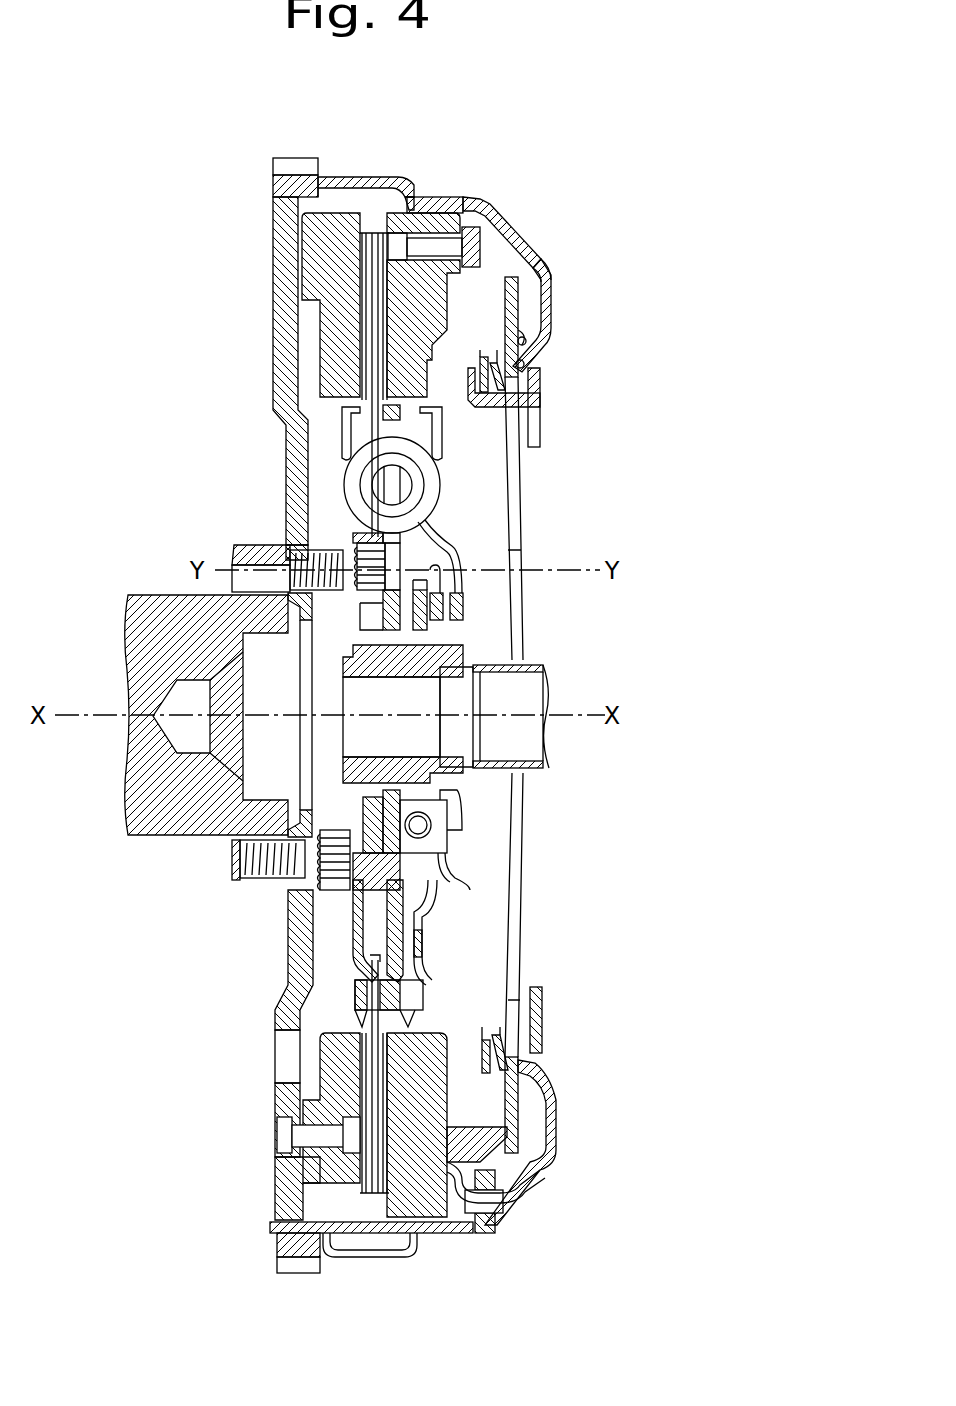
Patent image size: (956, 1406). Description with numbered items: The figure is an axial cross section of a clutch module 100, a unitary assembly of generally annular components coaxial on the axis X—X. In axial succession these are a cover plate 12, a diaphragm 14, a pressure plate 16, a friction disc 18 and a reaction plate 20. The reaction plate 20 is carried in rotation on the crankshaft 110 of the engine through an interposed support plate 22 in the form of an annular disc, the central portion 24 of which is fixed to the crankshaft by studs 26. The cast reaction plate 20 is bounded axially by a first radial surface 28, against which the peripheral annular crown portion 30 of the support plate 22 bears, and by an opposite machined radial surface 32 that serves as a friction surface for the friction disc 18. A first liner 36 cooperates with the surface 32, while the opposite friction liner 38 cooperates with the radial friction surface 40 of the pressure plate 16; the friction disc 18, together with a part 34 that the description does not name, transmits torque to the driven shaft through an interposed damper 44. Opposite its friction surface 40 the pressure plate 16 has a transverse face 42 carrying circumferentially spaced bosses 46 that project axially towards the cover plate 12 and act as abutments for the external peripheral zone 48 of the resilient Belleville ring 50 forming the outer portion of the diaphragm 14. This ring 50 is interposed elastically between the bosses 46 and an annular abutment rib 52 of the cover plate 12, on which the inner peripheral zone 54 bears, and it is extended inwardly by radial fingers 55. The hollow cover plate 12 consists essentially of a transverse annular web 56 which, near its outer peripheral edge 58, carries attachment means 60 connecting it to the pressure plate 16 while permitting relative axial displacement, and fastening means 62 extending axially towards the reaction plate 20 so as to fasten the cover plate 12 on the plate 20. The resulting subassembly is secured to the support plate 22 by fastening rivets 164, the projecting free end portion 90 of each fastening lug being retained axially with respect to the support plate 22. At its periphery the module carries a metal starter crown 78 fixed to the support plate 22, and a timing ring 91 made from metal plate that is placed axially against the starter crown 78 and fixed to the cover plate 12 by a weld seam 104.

The cover plate 12 is at (559, 313).
The diaphragm 14 is at (525, 493).
The pressure plate 16 is at (447, 209).
The friction disc 18 is at (310, 428).
The reaction plate 20 is at (316, 370).
The support plate 22 is at (281, 438).
The central portion 24 is at (305, 602).
The studs 26 is at (316, 535).
The first radial surface 28 is at (303, 258).
The peripheral annular crown portion 30 is at (285, 1195).
The radial surface 32 is at (365, 240).
The clutch plate 34 is at (365, 426).
The first liner 36 is at (370, 288).
The friction liner 38 is at (380, 323).
The radial friction surface 40 is at (460, 1215).
The transverse face 42 is at (448, 298).
The damper 44 is at (328, 470).
The bosses 46 is at (490, 278).
The external peripheral zone 48 is at (542, 278).
The Belleville ring 50 is at (519, 338).
The annular abutment rib 52 is at (522, 364).
The inner peripheral zone 54 is at (527, 398).
The radial fingers 55 is at (521, 812).
The annular web 56 is at (557, 1126).
The outer peripheral edge 58 is at (497, 1231).
The attachment means 60 is at (492, 273).
The fastening means 62 is at (371, 1249).
The starter crown 78 is at (270, 1244).
The projecting free end portion 90 is at (272, 1228).
The timing ring 91 is at (353, 1262).
The clutch module 100 is at (548, 267).
The weld seam 104 is at (410, 182).
The crankshaft 110 is at (200, 842).
The fastening rivets 164 is at (300, 1133).